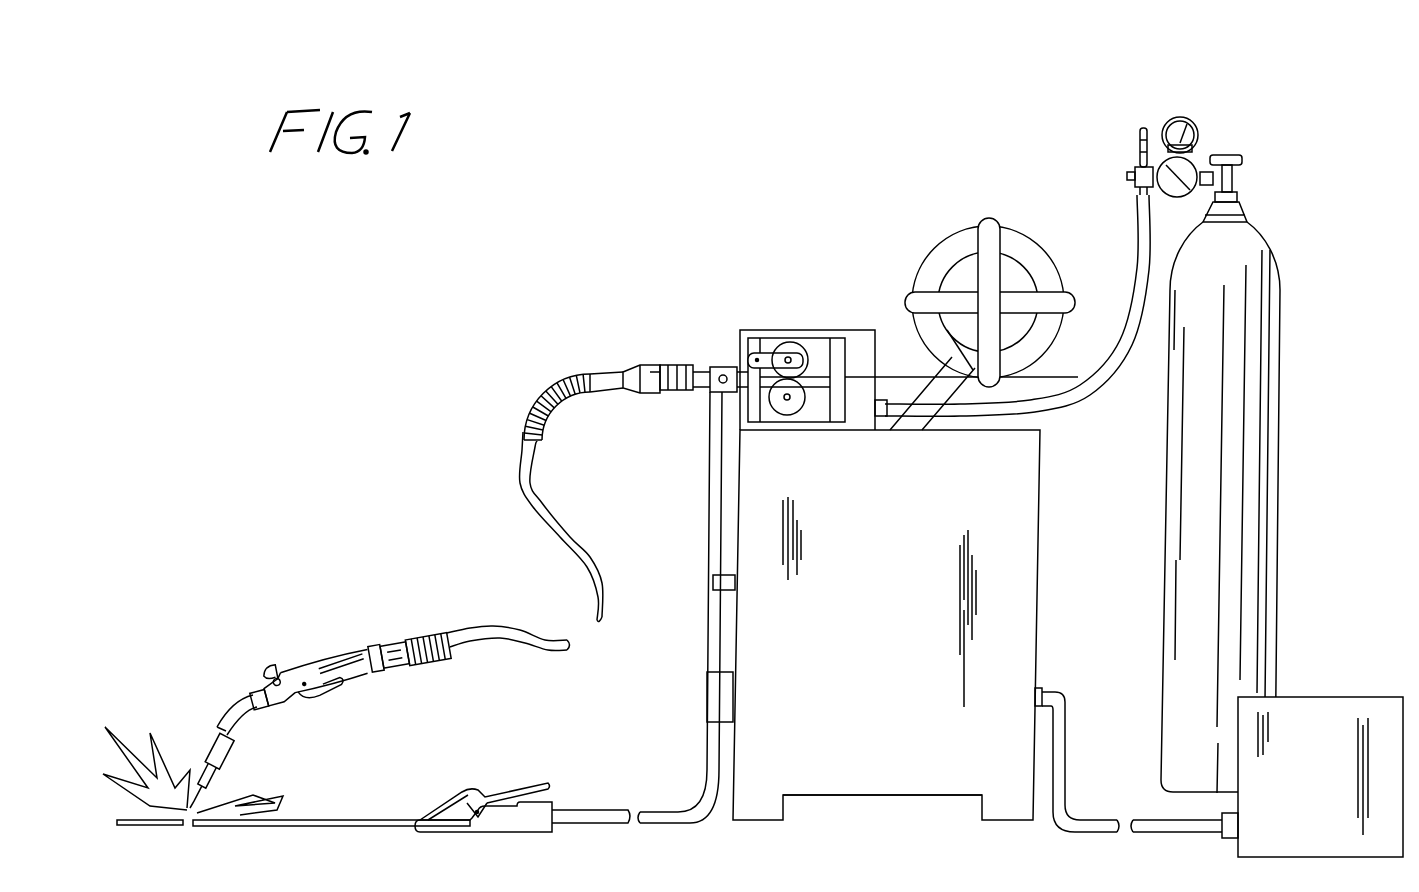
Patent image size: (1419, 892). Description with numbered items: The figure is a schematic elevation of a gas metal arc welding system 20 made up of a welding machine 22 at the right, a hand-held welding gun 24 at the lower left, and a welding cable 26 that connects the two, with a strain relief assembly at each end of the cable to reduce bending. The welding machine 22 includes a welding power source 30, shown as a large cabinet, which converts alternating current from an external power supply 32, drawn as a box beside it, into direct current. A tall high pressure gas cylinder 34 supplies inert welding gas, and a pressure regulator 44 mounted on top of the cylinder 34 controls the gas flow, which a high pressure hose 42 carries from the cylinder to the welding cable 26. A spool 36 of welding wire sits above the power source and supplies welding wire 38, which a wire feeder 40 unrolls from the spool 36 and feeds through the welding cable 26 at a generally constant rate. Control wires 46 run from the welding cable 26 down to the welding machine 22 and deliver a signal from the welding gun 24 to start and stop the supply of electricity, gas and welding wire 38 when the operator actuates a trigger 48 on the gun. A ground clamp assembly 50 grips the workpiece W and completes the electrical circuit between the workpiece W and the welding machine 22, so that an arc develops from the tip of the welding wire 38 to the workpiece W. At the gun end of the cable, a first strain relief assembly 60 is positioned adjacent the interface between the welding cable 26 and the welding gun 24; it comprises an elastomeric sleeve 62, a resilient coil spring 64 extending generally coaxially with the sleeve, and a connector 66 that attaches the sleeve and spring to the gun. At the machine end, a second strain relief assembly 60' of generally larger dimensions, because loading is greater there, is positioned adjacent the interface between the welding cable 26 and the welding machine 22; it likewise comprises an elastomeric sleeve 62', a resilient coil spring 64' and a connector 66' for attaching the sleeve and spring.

The GMAW system 20 is at (703, 232).
The welding machine 22 is at (876, 800).
The welding gun 24 is at (317, 655).
The welding cable 26 is at (570, 530).
The welding power source 30 is at (905, 581).
The external power supply 32 is at (1343, 797).
The high pressure gas cylinder 34 is at (1283, 430).
The spool 36 is at (1035, 235).
The welding wire 38 is at (893, 370).
The wire feeder 40 is at (778, 328).
The high pressure hose 42 is at (1085, 393).
The pressure regulator 44 is at (1197, 142).
The control wires 46 is at (707, 580).
The trigger 48 is at (337, 694).
The ground clamp assembly 50 is at (578, 824).
The first strain relief assembly 60 is at (493, 687).
The second strain relief assembly 60' is at (642, 319).
The elastomeric sleeve 62 is at (400, 587).
The elastomeric sleeve 62' is at (628, 422).
The resilient coil spring 64 is at (440, 606).
The resilient coil spring 64' is at (528, 368).
The connector 66 is at (369, 599).
The connector 66' is at (663, 329).
The workpiece W is at (213, 827).